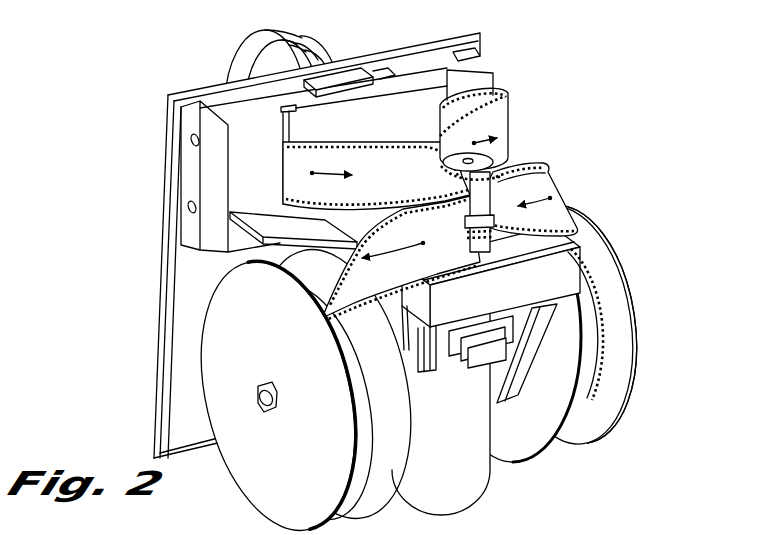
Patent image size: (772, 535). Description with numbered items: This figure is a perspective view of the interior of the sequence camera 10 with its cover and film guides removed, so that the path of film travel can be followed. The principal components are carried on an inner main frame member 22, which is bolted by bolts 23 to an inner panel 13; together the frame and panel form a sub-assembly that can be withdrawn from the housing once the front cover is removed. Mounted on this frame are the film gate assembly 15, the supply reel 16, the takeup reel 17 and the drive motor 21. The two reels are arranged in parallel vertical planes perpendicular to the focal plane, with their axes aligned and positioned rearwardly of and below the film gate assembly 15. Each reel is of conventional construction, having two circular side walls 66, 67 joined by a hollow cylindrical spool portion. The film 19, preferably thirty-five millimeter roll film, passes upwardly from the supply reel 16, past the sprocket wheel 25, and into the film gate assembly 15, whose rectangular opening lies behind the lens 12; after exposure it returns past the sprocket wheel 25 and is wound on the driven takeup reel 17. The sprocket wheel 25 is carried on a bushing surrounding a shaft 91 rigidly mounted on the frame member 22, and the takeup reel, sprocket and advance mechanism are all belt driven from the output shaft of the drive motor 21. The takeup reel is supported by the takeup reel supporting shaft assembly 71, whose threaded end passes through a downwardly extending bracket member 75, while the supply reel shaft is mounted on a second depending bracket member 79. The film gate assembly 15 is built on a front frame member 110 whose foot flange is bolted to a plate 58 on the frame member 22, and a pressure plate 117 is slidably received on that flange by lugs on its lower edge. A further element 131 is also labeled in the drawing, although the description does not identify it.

The sequence camera 10 is at (418, 277).
The lens 12 is at (227, 47).
The inner panel 13 is at (188, 268).
The film gate assembly 15 is at (411, 84).
The supply reel 16 is at (632, 284).
The takeup reel 17 is at (278, 361).
The film 19 is at (548, 186).
The drive motor 21 is at (474, 478).
The inner main frame member 22 is at (570, 268).
The bolts 23 is at (189, 203).
The sprocket wheel 25 is at (483, 241).
The plate 58 is at (523, 257).
The circular side wall 66 is at (405, 390).
The circular side wall 67 is at (628, 415).
The takeup reel supporting shaft assembly 71 is at (263, 414).
The downwardly extending bracket member 75 is at (413, 361).
The second depending bracket member 79 is at (519, 368).
The shaft 91 is at (478, 158).
The front frame member 110 is at (281, 128).
The pressure plate 117 is at (376, 164).
The cover plate 131 is at (343, 80).